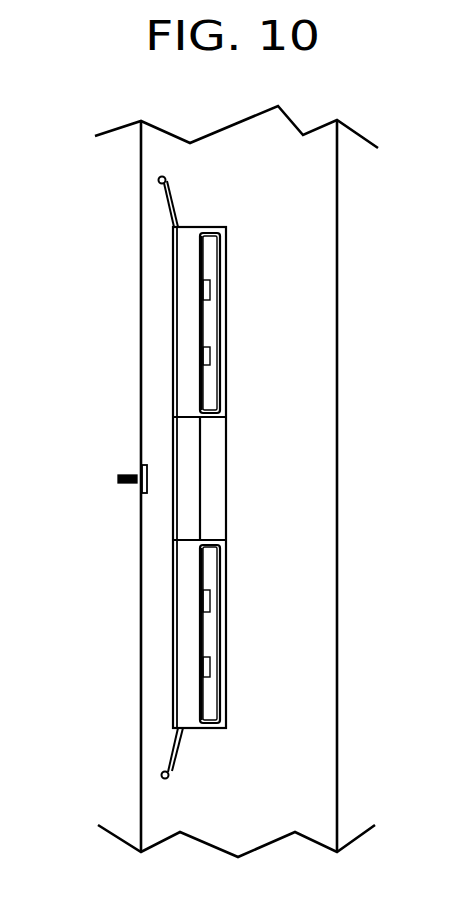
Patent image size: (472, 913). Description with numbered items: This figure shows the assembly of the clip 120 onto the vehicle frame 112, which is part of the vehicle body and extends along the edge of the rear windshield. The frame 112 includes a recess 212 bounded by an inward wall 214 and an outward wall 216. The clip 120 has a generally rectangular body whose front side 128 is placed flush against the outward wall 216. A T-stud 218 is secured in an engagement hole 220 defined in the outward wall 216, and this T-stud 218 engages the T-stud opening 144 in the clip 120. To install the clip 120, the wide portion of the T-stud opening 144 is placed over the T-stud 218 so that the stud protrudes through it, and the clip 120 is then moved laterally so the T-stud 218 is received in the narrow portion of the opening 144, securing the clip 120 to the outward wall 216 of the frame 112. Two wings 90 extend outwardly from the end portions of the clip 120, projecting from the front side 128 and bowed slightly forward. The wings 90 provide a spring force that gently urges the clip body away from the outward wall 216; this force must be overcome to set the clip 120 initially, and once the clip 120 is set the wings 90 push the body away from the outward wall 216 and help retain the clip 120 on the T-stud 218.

The frame 112 is at (368, 253).
The recess 212 is at (303, 297).
The inward wall 214 is at (337, 368).
The clip 120 is at (200, 188).
The front side 128 is at (173, 313).
The T-stud opening 144 is at (173, 478).
The T-stud 218 is at (147, 464).
The engagement hole 220 is at (140, 476).
The wings 90 is at (172, 207).
The outward wall 216 is at (141, 167).